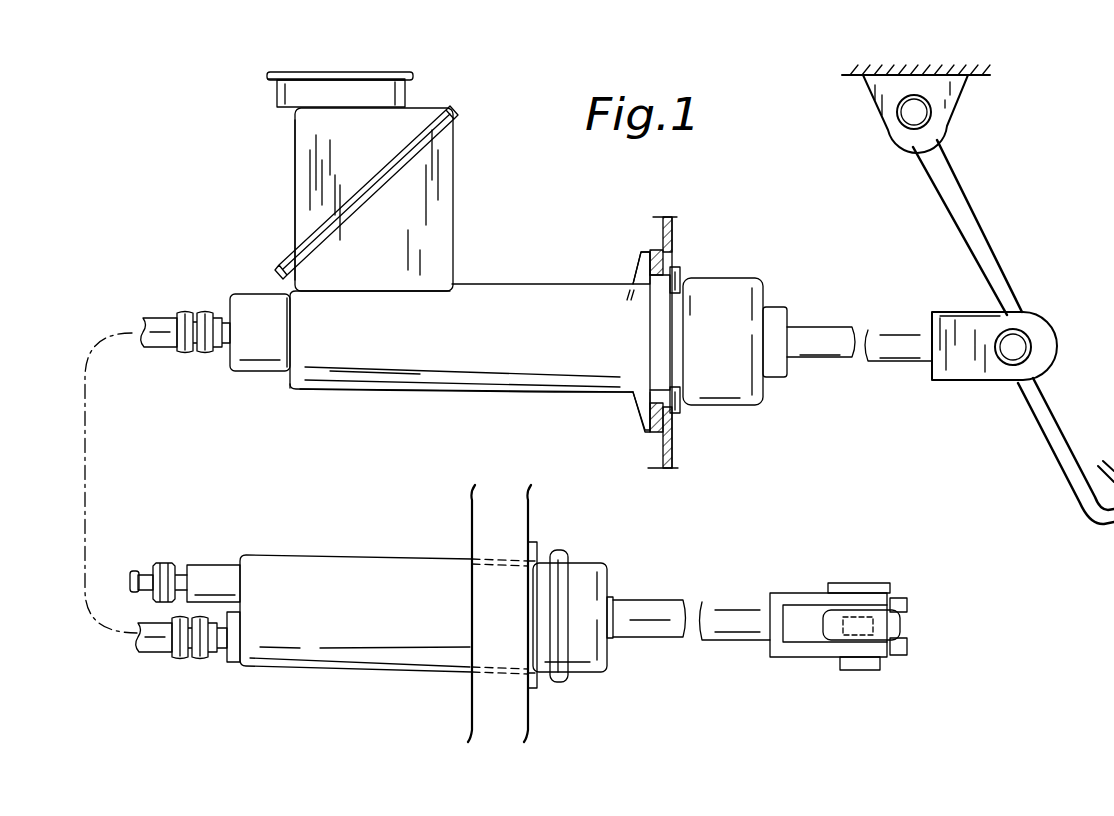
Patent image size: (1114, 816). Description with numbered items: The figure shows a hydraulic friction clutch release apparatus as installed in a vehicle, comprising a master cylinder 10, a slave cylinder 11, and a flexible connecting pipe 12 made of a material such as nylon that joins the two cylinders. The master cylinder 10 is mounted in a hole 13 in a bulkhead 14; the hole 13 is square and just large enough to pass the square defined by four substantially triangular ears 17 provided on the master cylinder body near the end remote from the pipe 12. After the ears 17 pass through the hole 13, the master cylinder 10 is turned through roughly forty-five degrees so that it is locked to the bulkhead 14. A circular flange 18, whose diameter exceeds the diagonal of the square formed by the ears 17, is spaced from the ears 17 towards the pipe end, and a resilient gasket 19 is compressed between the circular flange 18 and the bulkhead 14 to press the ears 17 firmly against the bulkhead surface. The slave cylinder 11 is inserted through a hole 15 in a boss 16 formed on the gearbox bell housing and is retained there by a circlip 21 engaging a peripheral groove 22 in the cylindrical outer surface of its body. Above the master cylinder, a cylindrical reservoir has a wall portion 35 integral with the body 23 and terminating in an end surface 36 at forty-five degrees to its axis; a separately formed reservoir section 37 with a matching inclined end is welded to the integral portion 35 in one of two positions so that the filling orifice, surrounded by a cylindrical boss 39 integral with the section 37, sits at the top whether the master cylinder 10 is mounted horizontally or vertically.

The master cylinder 10 is at (393, 354).
The slave cylinder 11 is at (338, 592).
The flexible connecting pipe 12 is at (154, 324).
The hole 13 is at (672, 255).
The bulkhead 14 is at (668, 450).
The hole 15 is at (498, 672).
The boss 16 is at (484, 519).
The ears 17 is at (680, 273).
The circular flange 18 is at (635, 257).
The resilient gasket 19 is at (652, 417).
The circlip 21 is at (530, 618).
The peripheral groove 22 is at (540, 573).
The body 23 is at (462, 393).
The reservoir portion 35 is at (437, 226).
The end surface 36 is at (430, 146).
The separately formed reservoir section 37 is at (298, 162).
The cylindrical boss 39 is at (289, 113).